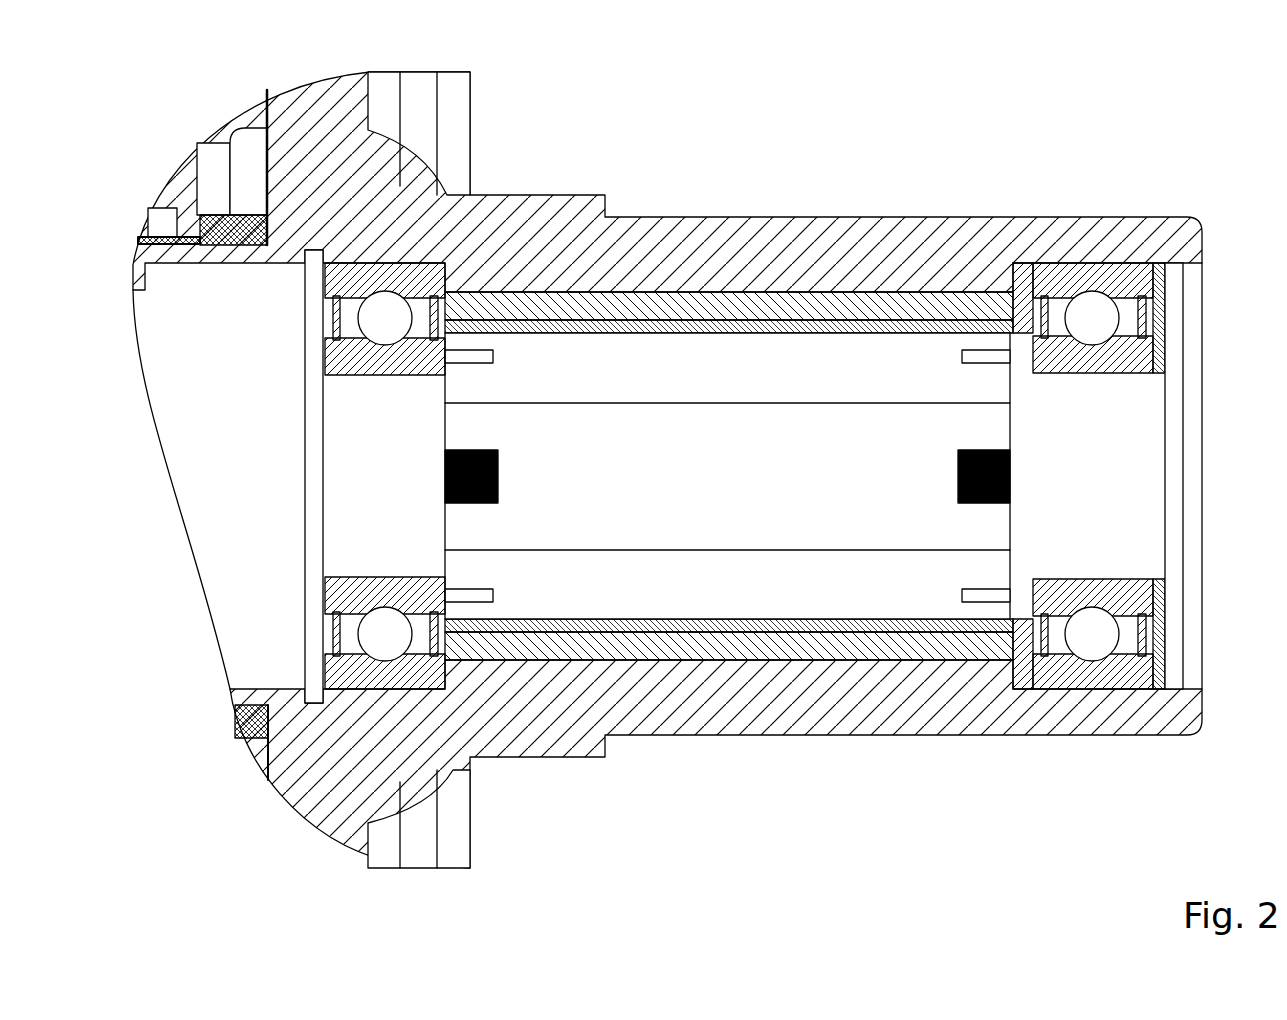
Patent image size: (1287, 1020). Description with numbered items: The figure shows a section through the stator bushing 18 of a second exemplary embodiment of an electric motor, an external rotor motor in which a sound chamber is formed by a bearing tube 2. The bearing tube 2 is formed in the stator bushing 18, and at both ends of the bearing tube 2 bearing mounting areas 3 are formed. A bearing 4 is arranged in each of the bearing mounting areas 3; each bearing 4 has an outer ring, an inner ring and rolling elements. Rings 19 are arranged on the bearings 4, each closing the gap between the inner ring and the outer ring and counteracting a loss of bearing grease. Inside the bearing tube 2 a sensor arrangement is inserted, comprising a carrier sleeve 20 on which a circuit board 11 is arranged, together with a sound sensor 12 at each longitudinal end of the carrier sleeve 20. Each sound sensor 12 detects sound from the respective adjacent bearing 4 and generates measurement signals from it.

The stator bushing 18 is at (303, 128).
The bearing tube 2 is at (838, 285).
The carrier sleeve 20 is at (658, 303).
The circuit board 11 is at (640, 430).
The sound sensor 12 is at (497, 448).
The bearing 4 is at (322, 292).
The ring 19 is at (1150, 327).
The bearing mounting area 3 is at (298, 486).